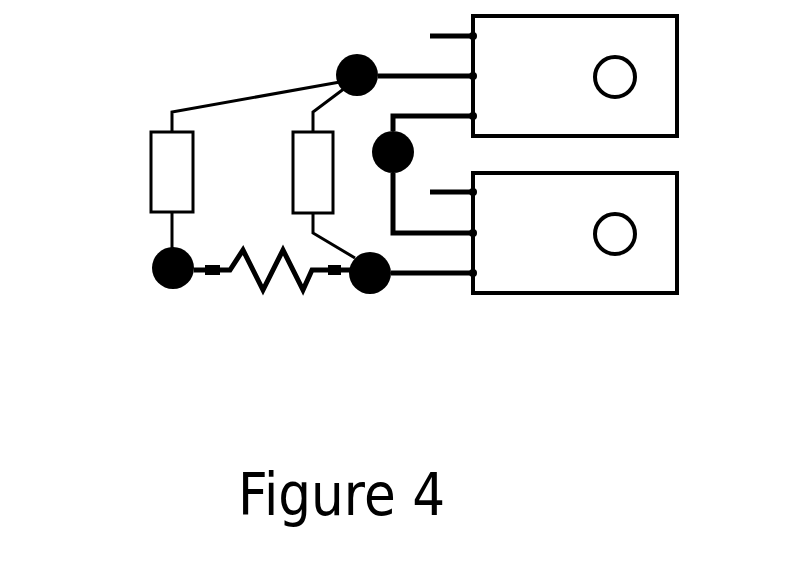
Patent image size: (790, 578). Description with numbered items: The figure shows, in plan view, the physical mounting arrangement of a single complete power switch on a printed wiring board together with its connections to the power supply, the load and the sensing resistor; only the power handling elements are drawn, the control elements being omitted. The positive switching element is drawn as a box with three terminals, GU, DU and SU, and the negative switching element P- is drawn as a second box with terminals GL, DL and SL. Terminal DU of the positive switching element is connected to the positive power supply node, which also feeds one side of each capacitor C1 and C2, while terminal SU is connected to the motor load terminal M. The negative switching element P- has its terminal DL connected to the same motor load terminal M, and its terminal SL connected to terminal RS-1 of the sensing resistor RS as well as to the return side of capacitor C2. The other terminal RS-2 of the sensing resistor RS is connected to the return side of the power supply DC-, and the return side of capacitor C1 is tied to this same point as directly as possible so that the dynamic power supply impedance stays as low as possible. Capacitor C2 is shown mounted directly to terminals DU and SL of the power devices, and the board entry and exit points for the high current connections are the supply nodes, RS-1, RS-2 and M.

The return side of the power supply DC- is at (124, 256).
The capacitor C1 is at (245, 165).
The capacitor C2 is at (324, 173).
The motor load terminal M is at (422, 174).
The sensing resistor RS is at (272, 313).
The terminal of the sensing resistor RS-1 is at (375, 294).
The terminal of the sensing resistor RS-2 is at (175, 289).
The negative switching element P- is at (758, 222).
The connection of the positive switching element GU is at (484, 44).
The connection to the positive power supply DU is at (503, 84).
The connection to the motor load SU is at (502, 119).
The connection of the negative switching element GL is at (482, 204).
The connection to the motor load terminal DL is at (502, 239).
The connection to the sensing resistor terminal SL is at (501, 274).